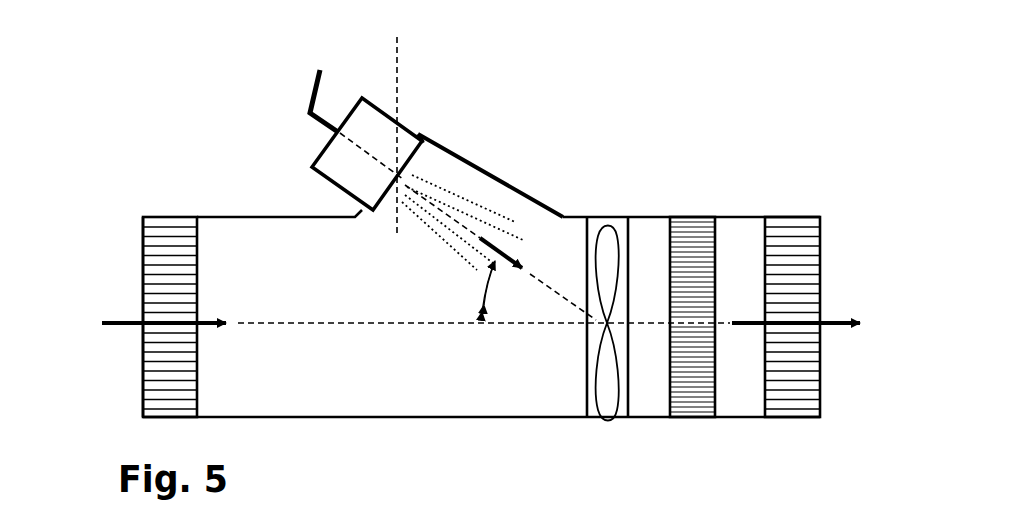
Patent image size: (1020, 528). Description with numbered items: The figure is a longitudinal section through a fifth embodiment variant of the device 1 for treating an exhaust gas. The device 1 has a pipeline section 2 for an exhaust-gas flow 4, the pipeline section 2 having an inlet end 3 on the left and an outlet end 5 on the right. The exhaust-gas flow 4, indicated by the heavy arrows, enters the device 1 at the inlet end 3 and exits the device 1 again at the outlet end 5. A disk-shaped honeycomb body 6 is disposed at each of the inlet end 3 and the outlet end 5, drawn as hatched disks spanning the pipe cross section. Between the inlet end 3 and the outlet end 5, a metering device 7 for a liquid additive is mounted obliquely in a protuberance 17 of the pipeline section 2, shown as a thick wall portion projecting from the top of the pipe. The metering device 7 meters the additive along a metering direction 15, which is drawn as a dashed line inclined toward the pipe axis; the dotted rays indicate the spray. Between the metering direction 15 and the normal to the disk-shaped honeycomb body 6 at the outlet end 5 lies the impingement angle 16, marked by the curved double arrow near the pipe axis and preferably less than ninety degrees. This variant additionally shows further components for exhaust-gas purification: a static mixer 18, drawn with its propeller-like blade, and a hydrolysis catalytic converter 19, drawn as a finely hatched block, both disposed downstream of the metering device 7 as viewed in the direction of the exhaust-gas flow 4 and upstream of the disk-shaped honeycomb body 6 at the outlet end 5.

The device 1 is at (129, 189).
The pipeline section 2 is at (512, 417).
The inlet end 3 is at (143, 415).
The exhaust-gas flow 4 is at (121, 318).
The outlet end 5 is at (795, 235).
The disk-shaped honeycomb body 6 is at (174, 247).
The metering device 7 is at (418, 130).
The metering direction 15 is at (522, 258).
The impingement angle 16 is at (492, 275).
The protuberance 17 is at (480, 187).
The static mixer 18 is at (615, 417).
The hydrolysis catalytic converter 19 is at (700, 418).